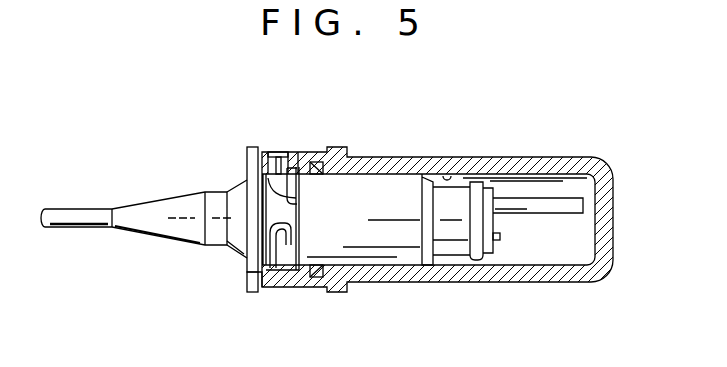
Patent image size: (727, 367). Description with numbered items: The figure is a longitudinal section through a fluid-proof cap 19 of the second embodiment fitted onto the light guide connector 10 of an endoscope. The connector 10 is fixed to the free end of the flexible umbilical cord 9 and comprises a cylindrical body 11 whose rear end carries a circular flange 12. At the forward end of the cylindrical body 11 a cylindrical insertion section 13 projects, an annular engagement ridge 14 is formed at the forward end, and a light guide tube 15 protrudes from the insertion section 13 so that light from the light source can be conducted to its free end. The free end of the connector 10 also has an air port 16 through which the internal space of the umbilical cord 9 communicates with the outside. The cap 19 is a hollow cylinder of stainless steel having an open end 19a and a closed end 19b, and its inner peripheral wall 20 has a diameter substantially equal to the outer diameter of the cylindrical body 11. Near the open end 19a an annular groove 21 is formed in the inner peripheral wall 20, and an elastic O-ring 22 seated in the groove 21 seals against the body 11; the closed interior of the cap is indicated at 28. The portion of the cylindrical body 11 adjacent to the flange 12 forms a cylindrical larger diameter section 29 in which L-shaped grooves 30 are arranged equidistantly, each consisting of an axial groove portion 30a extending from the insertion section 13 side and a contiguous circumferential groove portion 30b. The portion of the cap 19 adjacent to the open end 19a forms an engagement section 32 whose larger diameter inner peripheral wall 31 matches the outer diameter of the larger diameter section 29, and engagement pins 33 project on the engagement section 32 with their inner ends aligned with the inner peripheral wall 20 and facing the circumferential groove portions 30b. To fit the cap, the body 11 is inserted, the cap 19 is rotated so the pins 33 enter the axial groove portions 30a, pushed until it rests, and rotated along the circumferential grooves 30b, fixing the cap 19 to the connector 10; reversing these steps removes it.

The umbilical cord 9 is at (74, 212).
The connector 10 is at (391, 242).
The cylindrical body 11 is at (400, 257).
The circular flange 12 is at (252, 157).
The cylindrical insertion section 13 is at (452, 250).
The annular engagement ridge 14 is at (477, 258).
The light guide tube 15 is at (516, 198).
The air port 16 is at (500, 240).
The fluid-proof cap 19 is at (553, 165).
The open end of the cap 19a is at (253, 280).
The closed end of the cap 19b is at (607, 240).
The inner peripheral wall 20 is at (452, 176).
The annular groove 21 is at (314, 164).
The O-ring 22 is at (316, 276).
The cavity 28 is at (568, 246).
The cylindrical larger diameter section 29 is at (243, 253).
The L-shaped groove 30 is at (270, 211).
The axial groove portion 30a is at (302, 195).
The circumferential groove portion 30b is at (247, 176).
The larger diameter inner peripheral wall 31 is at (297, 157).
The engagement section 32 is at (278, 285).
The engagement pin 33 is at (280, 152).